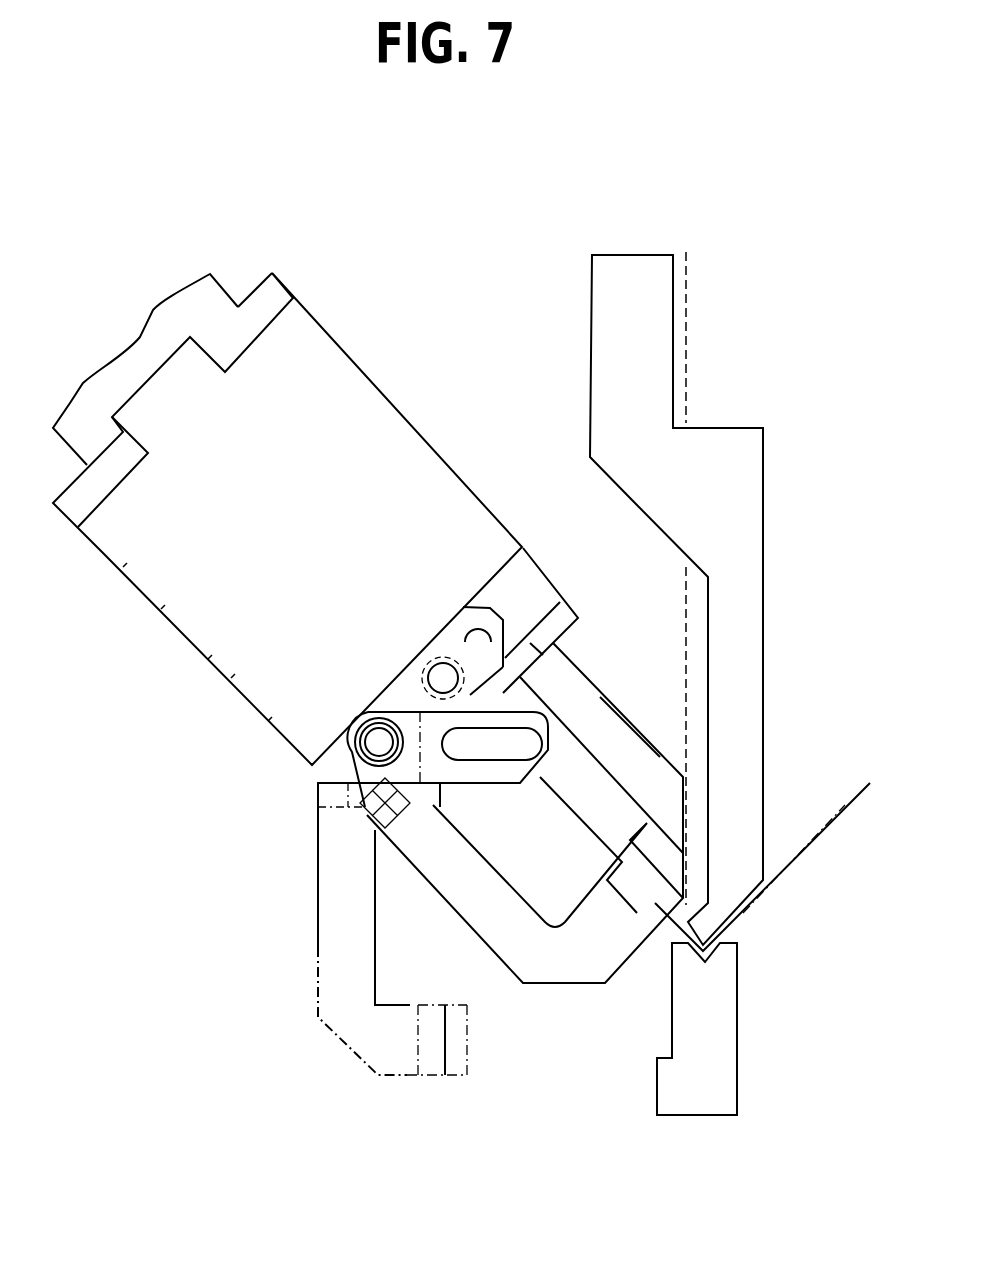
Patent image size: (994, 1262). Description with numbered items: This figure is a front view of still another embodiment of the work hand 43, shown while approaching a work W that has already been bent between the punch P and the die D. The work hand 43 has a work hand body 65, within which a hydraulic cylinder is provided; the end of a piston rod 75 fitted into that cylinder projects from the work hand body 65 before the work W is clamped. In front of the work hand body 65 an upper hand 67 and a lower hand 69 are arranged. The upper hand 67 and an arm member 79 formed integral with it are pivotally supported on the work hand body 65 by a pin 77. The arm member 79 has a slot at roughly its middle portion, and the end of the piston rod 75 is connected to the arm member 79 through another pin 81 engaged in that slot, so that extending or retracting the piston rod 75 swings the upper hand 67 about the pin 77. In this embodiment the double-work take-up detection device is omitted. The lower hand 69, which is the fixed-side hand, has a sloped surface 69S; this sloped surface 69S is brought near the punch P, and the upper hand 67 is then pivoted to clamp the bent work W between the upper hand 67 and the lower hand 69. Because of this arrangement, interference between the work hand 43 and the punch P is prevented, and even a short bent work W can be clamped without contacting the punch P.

The work hand 43 is at (432, 383).
The work hand body 65 is at (223, 648).
The upper hand 67 is at (318, 950).
The lower hand 69 is at (600, 697).
The sloped surface 69S is at (655, 780).
The piston rod 75 is at (445, 645).
The pin 77 is at (368, 735).
The arm member 79 is at (503, 610).
The pin 81 is at (432, 678).
The punch P is at (727, 443).
The work W is at (803, 843).
The die D is at (733, 1043).